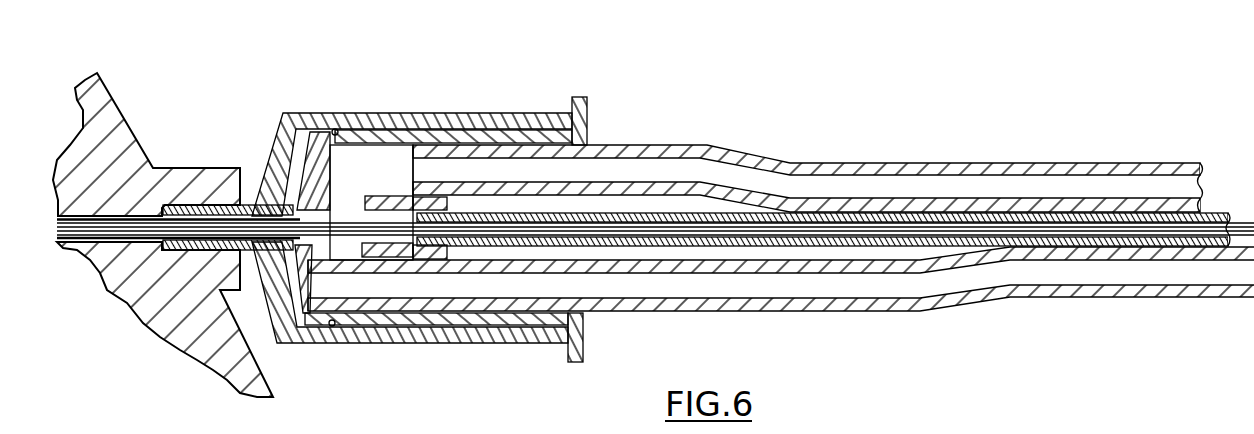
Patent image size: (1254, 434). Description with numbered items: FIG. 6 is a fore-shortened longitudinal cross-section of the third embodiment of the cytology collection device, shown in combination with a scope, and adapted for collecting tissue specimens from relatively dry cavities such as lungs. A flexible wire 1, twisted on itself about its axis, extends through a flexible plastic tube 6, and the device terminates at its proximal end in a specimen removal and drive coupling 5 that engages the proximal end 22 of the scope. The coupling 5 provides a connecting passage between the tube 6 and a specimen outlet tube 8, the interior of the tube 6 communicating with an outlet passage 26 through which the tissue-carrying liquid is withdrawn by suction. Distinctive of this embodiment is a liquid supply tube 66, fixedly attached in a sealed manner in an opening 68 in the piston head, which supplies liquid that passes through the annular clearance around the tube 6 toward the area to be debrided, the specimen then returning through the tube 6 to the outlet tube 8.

The proximal end of the scope 22 is at (117, 123).
The flexible plastic tube 6 is at (127, 213).
The specimen removal and drive coupling 5 is at (432, 102).
The opening in the piston head 68 is at (300, 313).
The outlet passage 26 is at (381, 181).
The specimen outlet tube 8 is at (845, 182).
The flexible wire 1 is at (882, 230).
The liquid supply tube 66 is at (823, 293).